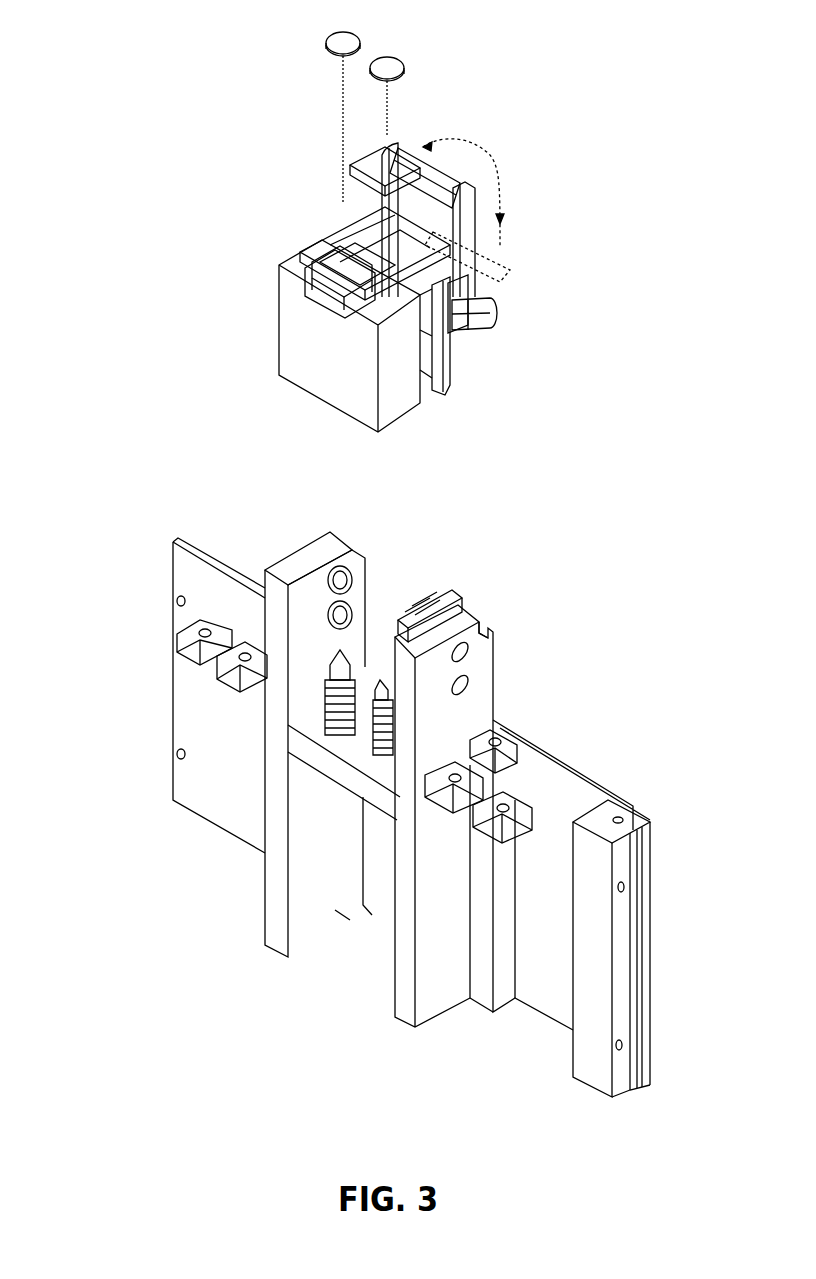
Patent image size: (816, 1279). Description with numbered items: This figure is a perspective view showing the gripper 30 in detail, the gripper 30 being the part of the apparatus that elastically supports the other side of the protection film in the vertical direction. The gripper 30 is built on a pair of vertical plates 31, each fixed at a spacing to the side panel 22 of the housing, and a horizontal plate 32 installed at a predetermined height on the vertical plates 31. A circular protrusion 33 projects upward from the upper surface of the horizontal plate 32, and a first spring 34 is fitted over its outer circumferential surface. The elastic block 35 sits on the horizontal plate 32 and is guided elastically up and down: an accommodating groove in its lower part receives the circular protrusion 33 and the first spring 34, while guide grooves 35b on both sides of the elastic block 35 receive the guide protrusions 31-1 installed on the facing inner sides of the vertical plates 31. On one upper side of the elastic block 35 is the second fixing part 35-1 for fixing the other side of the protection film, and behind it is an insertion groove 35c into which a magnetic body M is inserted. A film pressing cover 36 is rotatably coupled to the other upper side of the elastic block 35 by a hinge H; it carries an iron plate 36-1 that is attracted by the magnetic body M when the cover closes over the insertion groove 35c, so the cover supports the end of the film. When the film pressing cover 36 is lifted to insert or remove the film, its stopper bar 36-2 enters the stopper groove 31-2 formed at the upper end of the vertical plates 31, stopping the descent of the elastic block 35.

The gripper 30 is at (138, 219).
The magnetic body M is at (350, 32).
The elastic block 35 is at (330, 358).
The second fixing part 35-1 is at (318, 305).
The insertion groove 35c is at (340, 243).
The guide grooves 35b is at (430, 350).
The film pressing cover 36 is at (477, 205).
The iron plate 36-1 is at (360, 187).
The stopper bar 36-2 is at (507, 313).
The hinge H is at (455, 285).
The side panel 22 is at (177, 652).
The horizontal plate 32 is at (360, 776).
The guide protrusions 31-1 is at (352, 630).
The first spring 34 is at (372, 765).
The circular protrusion 33 is at (407, 606).
The vertical plates 31 is at (335, 910).
The stopper groove 31-2 is at (485, 625).